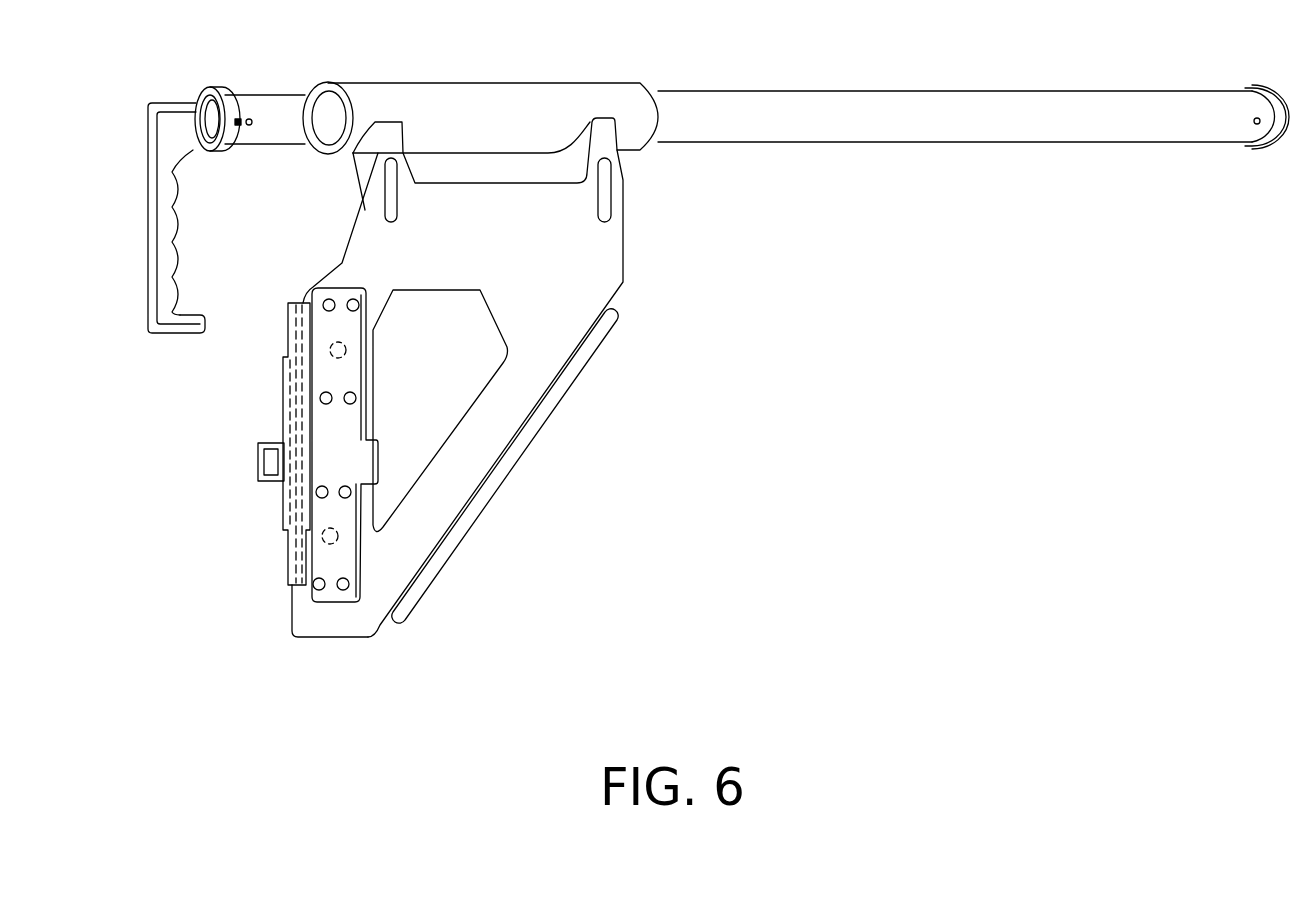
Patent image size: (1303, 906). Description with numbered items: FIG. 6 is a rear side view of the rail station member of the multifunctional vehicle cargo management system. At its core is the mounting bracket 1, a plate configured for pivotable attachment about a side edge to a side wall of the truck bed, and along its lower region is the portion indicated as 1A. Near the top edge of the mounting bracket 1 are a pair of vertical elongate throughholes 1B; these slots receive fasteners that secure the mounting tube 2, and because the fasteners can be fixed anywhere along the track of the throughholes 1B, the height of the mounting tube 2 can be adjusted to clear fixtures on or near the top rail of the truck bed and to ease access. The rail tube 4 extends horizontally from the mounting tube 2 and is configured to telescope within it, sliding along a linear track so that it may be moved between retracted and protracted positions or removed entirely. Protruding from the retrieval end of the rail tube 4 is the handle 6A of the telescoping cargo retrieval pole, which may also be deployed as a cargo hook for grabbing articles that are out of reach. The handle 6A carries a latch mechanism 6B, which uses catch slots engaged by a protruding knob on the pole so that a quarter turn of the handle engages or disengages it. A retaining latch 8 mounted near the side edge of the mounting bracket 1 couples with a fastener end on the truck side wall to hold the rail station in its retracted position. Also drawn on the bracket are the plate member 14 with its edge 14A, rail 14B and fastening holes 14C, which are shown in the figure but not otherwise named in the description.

The mounting bracket 1 is at (500, 253).
The lower end of bracket 1A is at (292, 612).
The vertical elongate throughholes 1B is at (388, 207).
The mounting tube 2 is at (440, 90).
The rail tube 4 is at (757, 110).
The handle 6A is at (166, 133).
The latch mechanism 6B is at (238, 90).
The retaining latch 8 is at (258, 462).
The mounting plate 14 is at (358, 474).
The edge of mounting plate 14A is at (322, 265).
The rail 14B is at (332, 330).
The fastening holes 14C is at (345, 357).